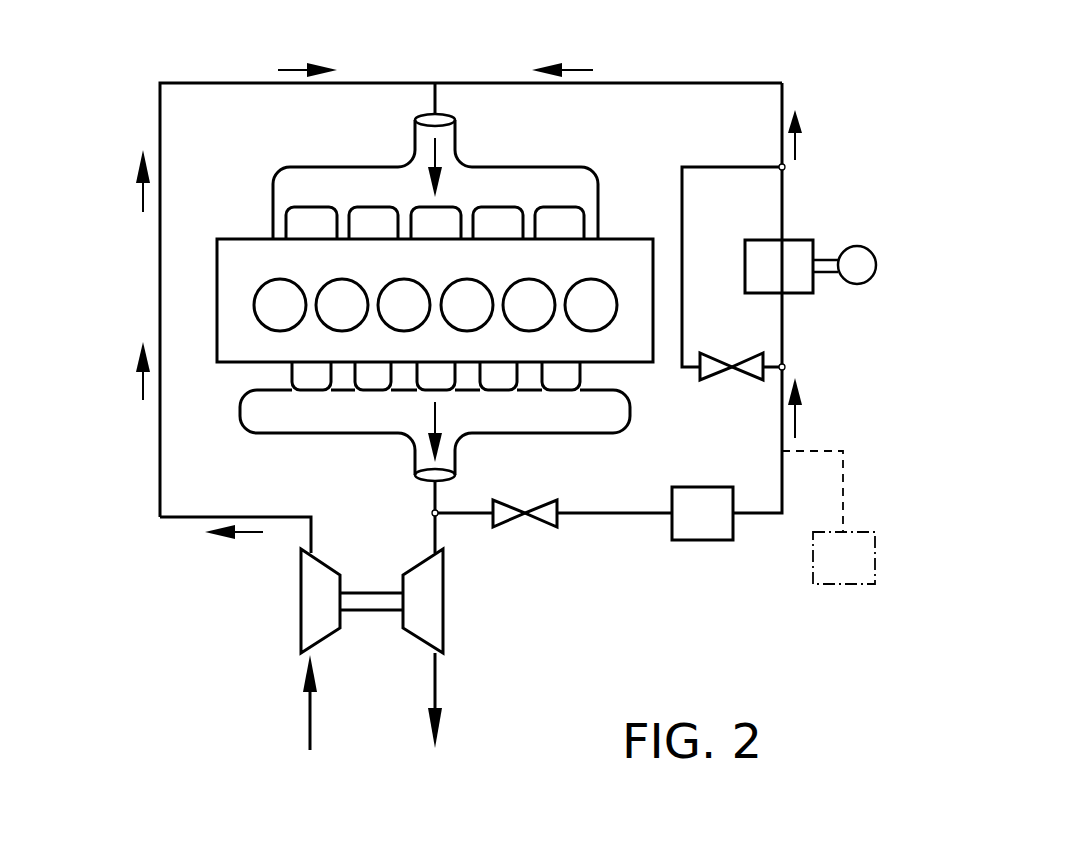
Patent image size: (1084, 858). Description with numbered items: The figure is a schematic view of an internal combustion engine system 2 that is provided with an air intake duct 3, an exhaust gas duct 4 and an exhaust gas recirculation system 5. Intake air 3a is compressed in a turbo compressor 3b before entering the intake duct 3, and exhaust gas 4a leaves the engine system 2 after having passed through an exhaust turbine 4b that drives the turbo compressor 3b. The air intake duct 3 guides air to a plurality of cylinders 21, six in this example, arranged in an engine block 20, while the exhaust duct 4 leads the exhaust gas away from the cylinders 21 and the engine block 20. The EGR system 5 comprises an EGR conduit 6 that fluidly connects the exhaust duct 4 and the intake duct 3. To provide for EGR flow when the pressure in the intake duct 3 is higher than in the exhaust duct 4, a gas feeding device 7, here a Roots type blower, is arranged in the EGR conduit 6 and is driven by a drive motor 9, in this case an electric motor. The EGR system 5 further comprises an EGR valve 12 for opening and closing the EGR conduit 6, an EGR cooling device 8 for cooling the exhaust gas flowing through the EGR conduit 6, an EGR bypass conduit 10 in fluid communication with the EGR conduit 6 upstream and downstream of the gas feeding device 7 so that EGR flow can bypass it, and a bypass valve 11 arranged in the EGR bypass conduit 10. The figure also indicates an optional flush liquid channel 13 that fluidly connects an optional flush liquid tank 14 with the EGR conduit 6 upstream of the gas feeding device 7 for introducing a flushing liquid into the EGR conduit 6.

The internal combustion engine system 2 is at (640, 41).
The air intake duct 3 is at (247, 83).
The intake air 3a is at (310, 710).
The turbo compressor 3b is at (301, 628).
The exhaust gas duct 4 is at (240, 420).
The exhaust gas 4a is at (435, 678).
The exhaust turbine 4b is at (443, 628).
The exhaust gas recirculation (EGR) system 5 is at (785, 598).
The EGR conduit 6 is at (782, 100).
The gas feeding device 7 is at (800, 240).
The EGR cooling device 8 is at (690, 540).
The drive motor 9 is at (877, 265).
The EGR bypass conduit 10 is at (735, 166).
The bypass valve 11 is at (715, 360).
The EGR valve 12 is at (535, 527).
The flush liquid channel 13 is at (845, 503).
The flush liquid tank 14 is at (875, 540).
The engine block 20 is at (245, 260).
The cylinders 21 is at (280, 305).